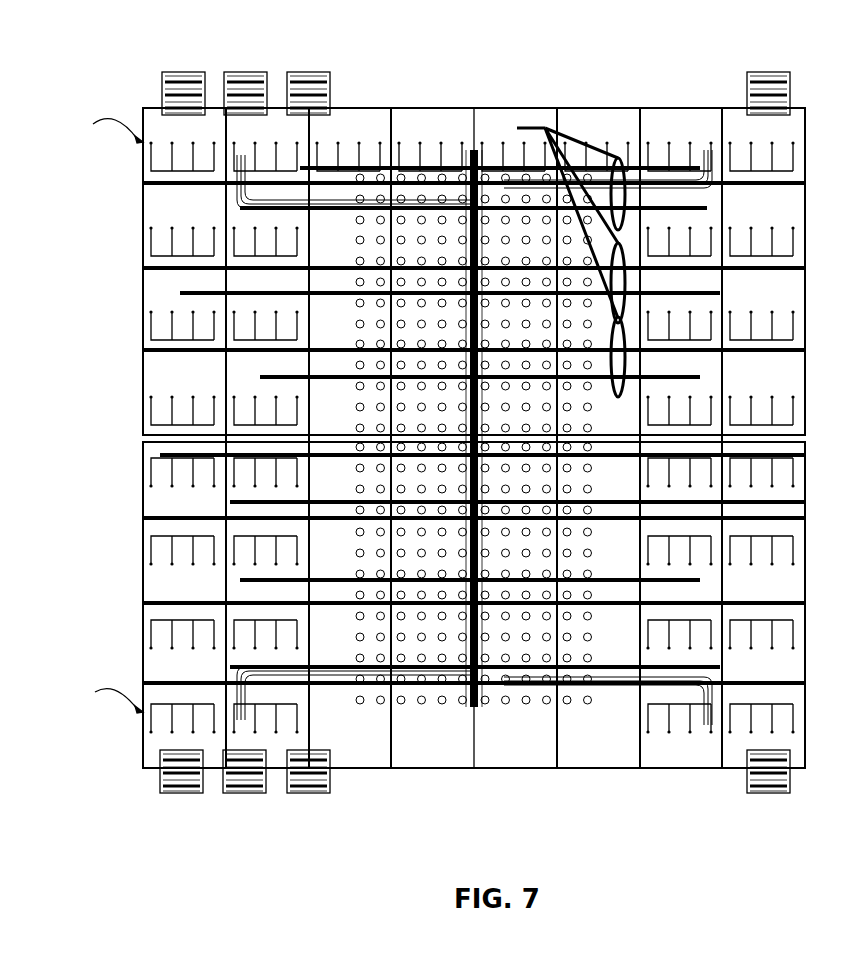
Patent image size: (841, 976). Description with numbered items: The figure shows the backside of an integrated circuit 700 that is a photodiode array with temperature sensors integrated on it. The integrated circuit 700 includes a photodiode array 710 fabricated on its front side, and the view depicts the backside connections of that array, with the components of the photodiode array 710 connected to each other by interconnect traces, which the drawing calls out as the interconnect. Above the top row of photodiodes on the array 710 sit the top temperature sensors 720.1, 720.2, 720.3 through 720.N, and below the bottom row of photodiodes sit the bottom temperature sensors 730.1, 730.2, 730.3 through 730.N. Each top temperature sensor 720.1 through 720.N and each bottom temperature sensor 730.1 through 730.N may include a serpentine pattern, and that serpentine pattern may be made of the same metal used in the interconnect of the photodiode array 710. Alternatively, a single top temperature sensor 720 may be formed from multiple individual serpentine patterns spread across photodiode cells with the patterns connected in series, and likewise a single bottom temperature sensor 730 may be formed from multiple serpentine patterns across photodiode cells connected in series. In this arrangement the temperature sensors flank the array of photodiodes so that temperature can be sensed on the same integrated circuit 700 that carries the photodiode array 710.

The integrated circuit 700 is at (412, 473).
The photodiode array 710 is at (463, 746).
The top temperature sensor 720 is at (498, 45).
The top temperature sensor 720.1 is at (183, 72).
The top temperature sensor 720.2 is at (245, 72).
The top temperature sensor 720.3 is at (310, 72).
The top temperature sensor 720.N is at (768, 72).
The bottom temperature sensor 730 is at (498, 852).
The bottom temperature sensor 730.1 is at (185, 795).
The bottom temperature sensor 730.2 is at (247, 795).
The bottom temperature sensor 730.3 is at (311, 795).
The bottom temperature sensor 730.N is at (769, 795).